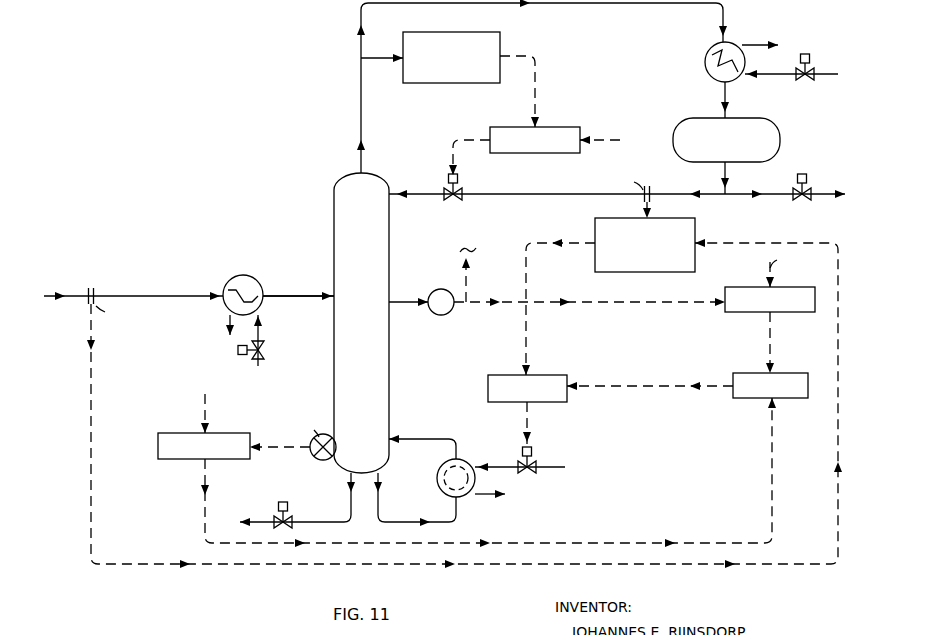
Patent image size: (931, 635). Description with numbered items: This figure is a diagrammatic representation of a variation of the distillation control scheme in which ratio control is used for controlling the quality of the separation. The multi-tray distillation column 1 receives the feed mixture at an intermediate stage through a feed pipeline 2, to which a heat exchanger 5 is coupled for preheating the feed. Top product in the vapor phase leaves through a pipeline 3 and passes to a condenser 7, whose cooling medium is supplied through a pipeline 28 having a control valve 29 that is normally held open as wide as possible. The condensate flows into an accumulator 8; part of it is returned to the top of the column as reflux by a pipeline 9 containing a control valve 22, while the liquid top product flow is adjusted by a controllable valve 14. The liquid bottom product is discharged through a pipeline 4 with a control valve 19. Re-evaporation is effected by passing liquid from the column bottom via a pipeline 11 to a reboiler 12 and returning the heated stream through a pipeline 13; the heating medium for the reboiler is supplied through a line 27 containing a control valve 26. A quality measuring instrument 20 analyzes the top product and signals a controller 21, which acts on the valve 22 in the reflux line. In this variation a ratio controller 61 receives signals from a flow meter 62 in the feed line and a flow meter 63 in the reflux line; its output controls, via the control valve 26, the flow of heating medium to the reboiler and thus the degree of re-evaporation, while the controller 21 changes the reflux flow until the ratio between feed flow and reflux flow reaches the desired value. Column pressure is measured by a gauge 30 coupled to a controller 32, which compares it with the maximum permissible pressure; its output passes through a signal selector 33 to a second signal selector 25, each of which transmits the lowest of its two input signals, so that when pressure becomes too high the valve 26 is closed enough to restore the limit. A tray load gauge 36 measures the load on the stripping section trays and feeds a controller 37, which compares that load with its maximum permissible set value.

The distillation column 1 is at (365, 333).
The feed pipeline 2 is at (280, 296).
The top product discharge pipeline 3 is at (359, 45).
The bottom product pipeline 4 is at (310, 522).
The heat exchanger 5 is at (236, 279).
The condenser 7 is at (712, 51).
The accumulator 8 is at (708, 118).
The reflux pipeline 9 is at (405, 194).
The reboiler feed pipeline 11 is at (400, 522).
The reboiler 12 is at (440, 470).
The reboiler return pipeline 13 is at (417, 439).
The controllable valve 14 is at (802, 202).
The control valve 19 is at (270, 516).
The quality measuring instrument 20 is at (438, 84).
The controller 21 is at (562, 127).
The control valve 22 is at (453, 202).
The signal selector 25 is at (546, 375).
The control valve 26 is at (527, 475).
The heating medium supply line 27 is at (487, 467).
The cooling medium pipeline 28 is at (762, 76).
The control valve 29 is at (805, 82).
The pressure gauge 30 is at (436, 292).
The controller 32 is at (793, 312).
The signal selector 33 is at (783, 373).
The tray load gauge 36 is at (319, 460).
The controller 37 is at (180, 460).
The ratio controller 61 is at (695, 232).
The flow meter 62 is at (87, 292).
The flow meter 63 is at (652, 192).